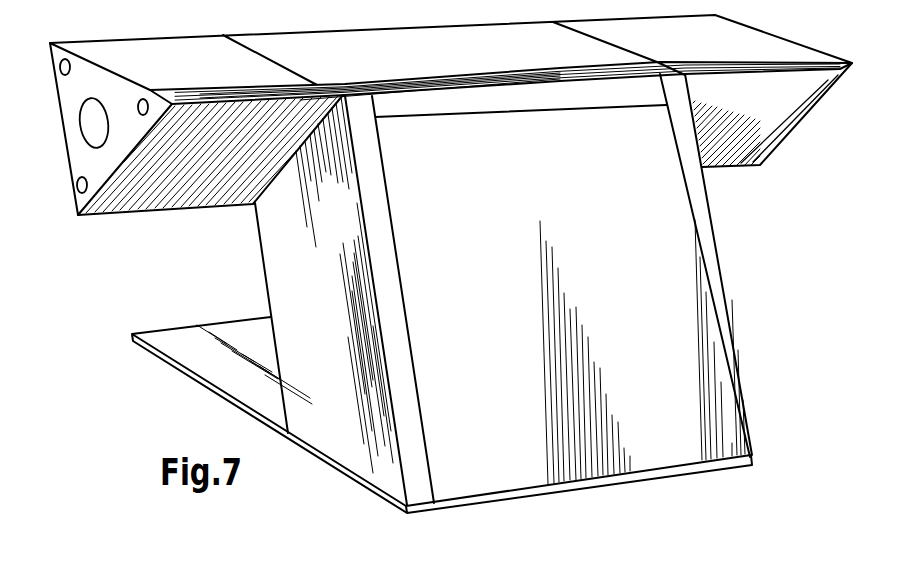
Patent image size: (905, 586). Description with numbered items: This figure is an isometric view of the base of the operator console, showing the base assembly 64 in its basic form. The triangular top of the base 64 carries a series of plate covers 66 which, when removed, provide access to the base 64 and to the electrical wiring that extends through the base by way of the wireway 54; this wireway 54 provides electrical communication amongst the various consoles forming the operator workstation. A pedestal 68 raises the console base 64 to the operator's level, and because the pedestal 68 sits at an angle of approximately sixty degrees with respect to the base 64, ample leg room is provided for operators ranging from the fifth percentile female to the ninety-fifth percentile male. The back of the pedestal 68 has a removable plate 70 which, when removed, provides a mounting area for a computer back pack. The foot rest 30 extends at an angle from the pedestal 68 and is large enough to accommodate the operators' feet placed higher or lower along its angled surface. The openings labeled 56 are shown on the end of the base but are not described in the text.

The foot rest 30 is at (233, 319).
The wireway 54 is at (86, 121).
The mounting holes 56 is at (61, 66).
The base assembly 64 is at (765, 117).
The plate covers 66 is at (240, 74).
The pedestal 68 is at (357, 369).
The removable plate 70 is at (463, 314).